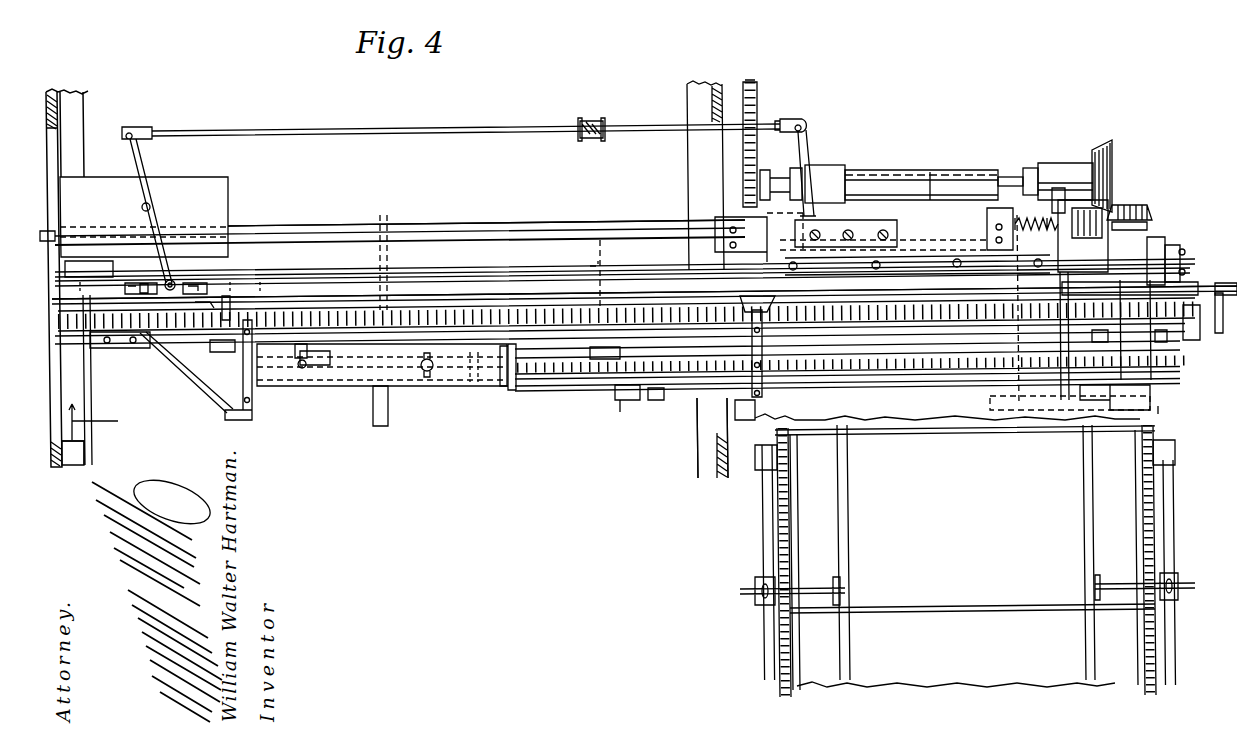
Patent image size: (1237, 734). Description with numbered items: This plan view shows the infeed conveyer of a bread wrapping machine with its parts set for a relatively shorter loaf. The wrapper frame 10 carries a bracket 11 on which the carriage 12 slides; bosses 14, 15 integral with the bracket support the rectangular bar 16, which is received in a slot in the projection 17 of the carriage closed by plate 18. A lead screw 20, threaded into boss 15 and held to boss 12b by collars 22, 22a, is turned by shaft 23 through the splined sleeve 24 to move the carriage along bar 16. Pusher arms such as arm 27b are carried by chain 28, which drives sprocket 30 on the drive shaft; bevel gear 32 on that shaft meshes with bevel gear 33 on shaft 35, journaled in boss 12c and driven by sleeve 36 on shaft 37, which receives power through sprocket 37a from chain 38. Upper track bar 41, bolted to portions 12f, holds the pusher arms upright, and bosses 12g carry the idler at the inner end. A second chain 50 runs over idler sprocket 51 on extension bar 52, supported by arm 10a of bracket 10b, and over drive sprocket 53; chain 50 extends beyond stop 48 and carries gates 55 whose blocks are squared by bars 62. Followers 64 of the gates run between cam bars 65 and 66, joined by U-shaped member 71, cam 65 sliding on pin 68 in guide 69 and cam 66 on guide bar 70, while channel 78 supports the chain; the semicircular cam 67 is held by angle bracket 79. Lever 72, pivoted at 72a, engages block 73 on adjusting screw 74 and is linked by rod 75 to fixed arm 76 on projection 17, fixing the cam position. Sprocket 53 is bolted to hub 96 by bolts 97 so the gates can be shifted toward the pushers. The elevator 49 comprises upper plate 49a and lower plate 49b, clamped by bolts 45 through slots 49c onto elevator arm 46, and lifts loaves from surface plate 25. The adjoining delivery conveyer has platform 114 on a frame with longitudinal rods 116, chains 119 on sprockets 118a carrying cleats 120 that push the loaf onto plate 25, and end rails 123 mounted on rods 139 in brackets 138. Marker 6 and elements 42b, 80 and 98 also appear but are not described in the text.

The section line 6 is at (73, 454).
The wrapper frame 10 is at (698, 474).
The arm 10a is at (266, 297).
The bracket 10b is at (241, 202).
The bracket 11 is at (742, 434).
The carriage 12 is at (604, 305).
The boss 12b is at (1130, 211).
The boss 12c is at (1076, 167).
The portions of carriage 12f is at (640, 416).
The bosses 12g is at (590, 362).
The boss 14 is at (712, 189).
The boss 15 is at (1010, 177).
The rectangular bar 16 is at (958, 213).
The projection 17 is at (924, 175).
The plate 18 is at (892, 173).
The lead screw 20 is at (1032, 169).
The collar 22 is at (1042, 221).
The collar 22a is at (1158, 239).
The shaft 23 is at (478, 225).
The sleeve 24 is at (736, 237).
The slotted surface plate 25 is at (1160, 423).
The pusher arm 27b is at (514, 380).
The chain 28 is at (672, 382).
The drive sprocket 30 is at (1188, 383).
The bevel gear 32 is at (1156, 227).
The bevel gear 33 is at (1114, 151).
The shaft 35 is at (1018, 177).
The sleeve 36 is at (850, 169).
The shaft 37 is at (780, 176).
The sprocket 37a is at (776, 121).
The chain 38 is at (762, 107).
The upper track bar 41 is at (592, 380).
The block 42b is at (1156, 403).
The bolts 45 is at (338, 364).
The elevator arm 46 is at (382, 428).
The stop 48 is at (254, 417).
The elevator 49 is at (348, 387).
The upper plate 49a is at (494, 384).
The lower plate 49b is at (318, 378).
The slots 49c is at (284, 370).
The second chain 50 is at (528, 311).
The idler sprocket 51 is at (96, 359).
The extension bar 52 is at (426, 269).
The drive sprocket 53 is at (1186, 295).
The gates 55 is at (241, 385).
The bar 62 is at (216, 334).
The followers 64 is at (748, 298).
The cam bar 65 is at (492, 289).
The cam bar 66 is at (474, 368).
The semicircular cam 67 is at (1172, 265).
The pin 68 is at (946, 270).
The guide 69 is at (1004, 270).
The guide bar 70 is at (862, 390).
The U-shaped connecting member 71 is at (366, 301).
The lever 72 is at (162, 172).
The pivot 72a is at (144, 210).
The traveling block 73 is at (174, 298).
The adjusting screw 74 is at (146, 304).
The rod 75 is at (440, 135).
The fixed arm 76 is at (814, 141).
The channel 78 is at (564, 313).
The angle bracket 79 is at (1174, 295).
The brace 80 is at (182, 388).
The hub 96 is at (1190, 339).
The bolts 97 is at (1154, 336).
The coupling 98 is at (602, 123).
The plate 114 is at (964, 560).
The longitudinal rods 116 is at (764, 551).
The sprockets 118a is at (770, 493).
The chains 119 is at (778, 641).
The cleats 120 is at (946, 440).
The end rails 123 is at (848, 525).
The brackets 138 is at (1180, 585).
The rods 139 is at (744, 597).